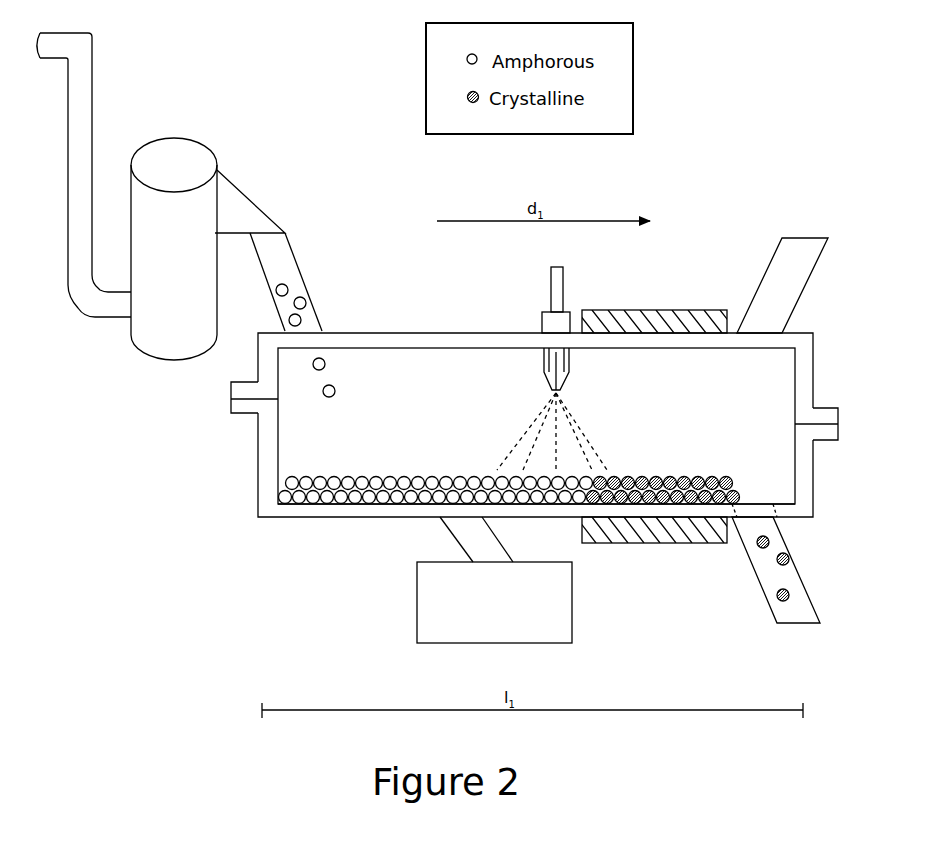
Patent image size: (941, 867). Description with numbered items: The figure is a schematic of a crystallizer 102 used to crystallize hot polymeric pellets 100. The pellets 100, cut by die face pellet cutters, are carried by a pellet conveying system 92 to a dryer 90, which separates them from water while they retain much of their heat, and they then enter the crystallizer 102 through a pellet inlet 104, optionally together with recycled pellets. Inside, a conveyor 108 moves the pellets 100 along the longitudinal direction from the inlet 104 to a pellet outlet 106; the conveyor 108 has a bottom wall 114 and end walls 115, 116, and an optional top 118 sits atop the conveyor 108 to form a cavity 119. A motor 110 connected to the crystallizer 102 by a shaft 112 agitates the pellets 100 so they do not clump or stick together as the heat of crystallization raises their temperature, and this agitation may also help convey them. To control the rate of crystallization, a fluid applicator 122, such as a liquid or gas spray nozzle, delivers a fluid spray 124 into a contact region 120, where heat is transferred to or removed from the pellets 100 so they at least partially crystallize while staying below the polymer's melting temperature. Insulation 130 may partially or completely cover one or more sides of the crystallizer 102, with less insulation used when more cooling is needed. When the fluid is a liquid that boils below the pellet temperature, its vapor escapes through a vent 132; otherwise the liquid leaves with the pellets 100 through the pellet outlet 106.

The dryer 90 is at (245, 150).
The pellet conveying system 92 is at (80, 95).
The polymeric pellets 100 is at (289, 289).
The crystallizer 102 is at (692, 278).
The pellet inlet 104 is at (303, 267).
The pellet outlet 106 is at (753, 567).
The conveyor 108 is at (258, 475).
The motor 110 is at (482, 613).
The shaft 112 is at (453, 540).
The bottom wall 114 is at (292, 518).
The end wall 115 is at (265, 436).
The end wall 116 is at (808, 475).
The top 118 is at (422, 333).
The cavity 119 is at (328, 435).
The contact region 120 is at (617, 463).
The fluid applicator 122 is at (547, 372).
The fluid spray 124 is at (585, 433).
The insulation 130 is at (657, 309).
The vent 132 is at (812, 277).